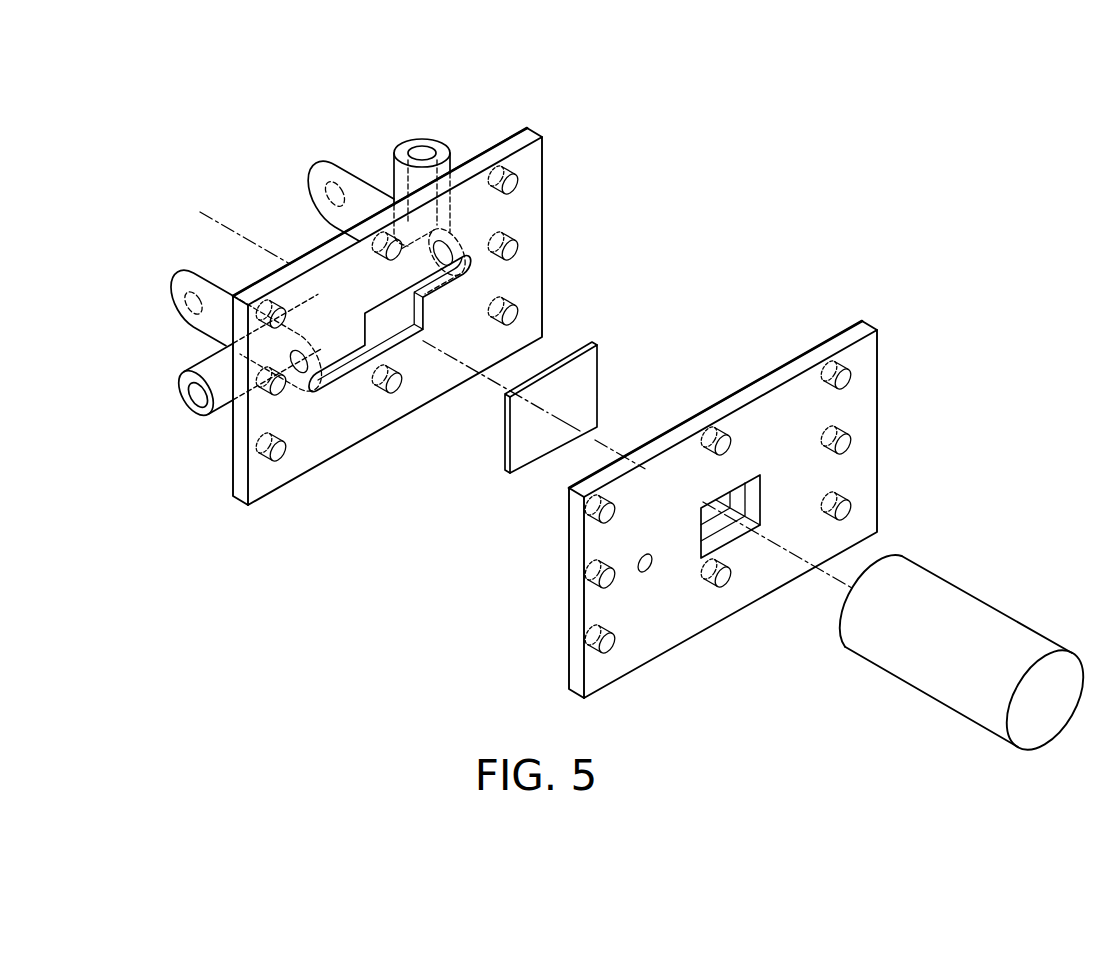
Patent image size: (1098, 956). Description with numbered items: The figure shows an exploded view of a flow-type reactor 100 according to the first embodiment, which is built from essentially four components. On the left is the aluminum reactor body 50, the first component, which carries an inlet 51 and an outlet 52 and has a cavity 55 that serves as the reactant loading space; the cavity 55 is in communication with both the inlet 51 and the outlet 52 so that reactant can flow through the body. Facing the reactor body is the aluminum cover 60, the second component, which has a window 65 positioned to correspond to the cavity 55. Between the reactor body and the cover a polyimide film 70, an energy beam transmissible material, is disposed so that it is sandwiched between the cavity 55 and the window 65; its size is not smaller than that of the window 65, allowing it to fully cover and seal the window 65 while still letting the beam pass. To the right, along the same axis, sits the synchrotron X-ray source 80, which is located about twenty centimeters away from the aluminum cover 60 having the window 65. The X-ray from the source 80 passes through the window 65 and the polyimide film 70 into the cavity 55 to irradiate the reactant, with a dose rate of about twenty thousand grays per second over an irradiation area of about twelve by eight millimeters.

The flow-type reactor 100 is at (1028, 110).
The aluminum reactor body 50 is at (537, 131).
The inlet 51 is at (183, 292).
The outlet 52 is at (322, 185).
The cavity 55 is at (390, 343).
The aluminum cover 60 is at (867, 322).
The window 65 is at (735, 540).
The polyimide film 70 is at (598, 344).
The synchrotron X-ray source 80 is at (918, 590).